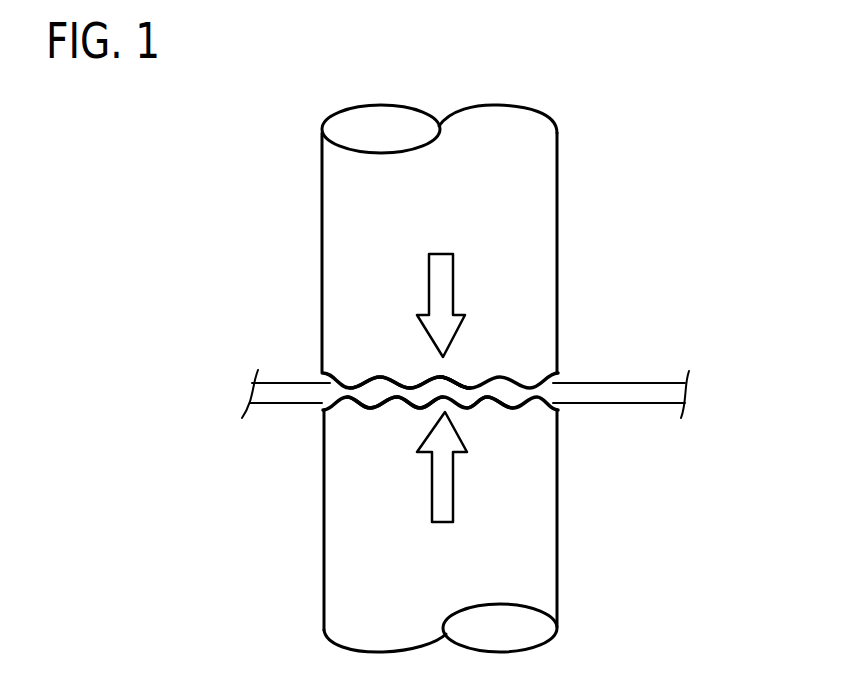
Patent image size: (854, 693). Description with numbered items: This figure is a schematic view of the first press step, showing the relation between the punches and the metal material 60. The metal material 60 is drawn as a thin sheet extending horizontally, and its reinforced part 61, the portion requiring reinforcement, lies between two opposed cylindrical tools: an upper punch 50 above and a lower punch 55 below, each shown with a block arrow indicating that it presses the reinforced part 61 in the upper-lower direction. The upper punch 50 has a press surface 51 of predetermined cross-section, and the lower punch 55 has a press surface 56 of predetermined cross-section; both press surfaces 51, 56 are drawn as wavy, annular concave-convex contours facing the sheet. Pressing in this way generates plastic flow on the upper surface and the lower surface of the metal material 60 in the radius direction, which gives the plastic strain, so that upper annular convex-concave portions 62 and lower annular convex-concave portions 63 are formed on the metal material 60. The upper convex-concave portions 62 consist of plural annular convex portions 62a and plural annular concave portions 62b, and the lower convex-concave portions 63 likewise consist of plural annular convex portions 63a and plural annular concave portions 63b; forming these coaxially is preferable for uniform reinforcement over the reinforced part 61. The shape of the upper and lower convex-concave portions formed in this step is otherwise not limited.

The upper punch 50 is at (565, 226).
The press surface 51 is at (320, 369).
The lower punch 55 is at (577, 538).
The press surface 56 is at (318, 397).
The metal material 60 is at (667, 367).
The reinforced part 61 is at (458, 380).
The upper annular convex-concave portions 62 is at (378, 371).
The annular convex portions 62a is at (434, 376).
The annular concave portions 62b is at (471, 386).
The lower annular convex-concave portions 63 is at (372, 414).
The annular convex portions 63a is at (418, 412).
The annular concave portions 63b is at (488, 400).